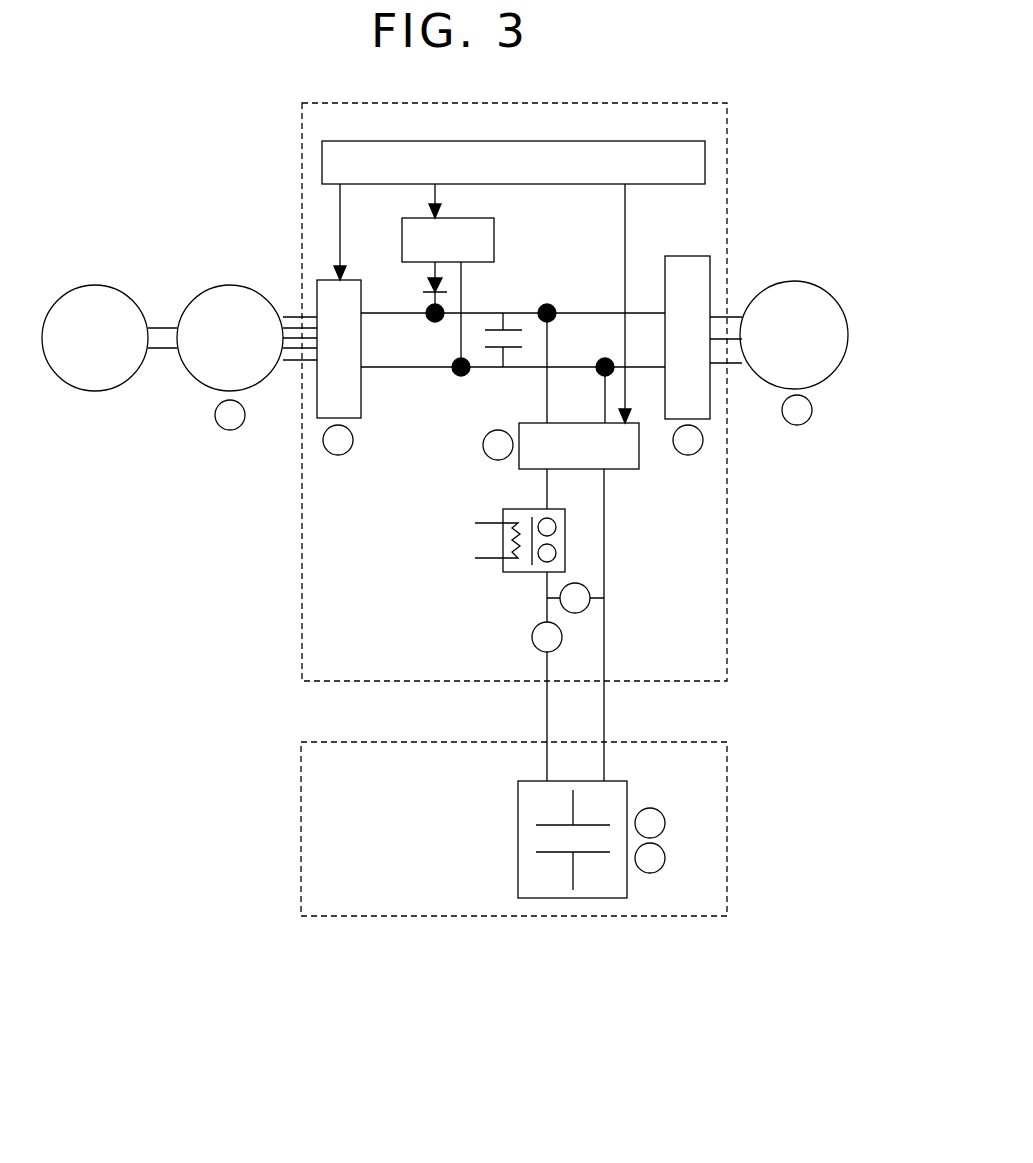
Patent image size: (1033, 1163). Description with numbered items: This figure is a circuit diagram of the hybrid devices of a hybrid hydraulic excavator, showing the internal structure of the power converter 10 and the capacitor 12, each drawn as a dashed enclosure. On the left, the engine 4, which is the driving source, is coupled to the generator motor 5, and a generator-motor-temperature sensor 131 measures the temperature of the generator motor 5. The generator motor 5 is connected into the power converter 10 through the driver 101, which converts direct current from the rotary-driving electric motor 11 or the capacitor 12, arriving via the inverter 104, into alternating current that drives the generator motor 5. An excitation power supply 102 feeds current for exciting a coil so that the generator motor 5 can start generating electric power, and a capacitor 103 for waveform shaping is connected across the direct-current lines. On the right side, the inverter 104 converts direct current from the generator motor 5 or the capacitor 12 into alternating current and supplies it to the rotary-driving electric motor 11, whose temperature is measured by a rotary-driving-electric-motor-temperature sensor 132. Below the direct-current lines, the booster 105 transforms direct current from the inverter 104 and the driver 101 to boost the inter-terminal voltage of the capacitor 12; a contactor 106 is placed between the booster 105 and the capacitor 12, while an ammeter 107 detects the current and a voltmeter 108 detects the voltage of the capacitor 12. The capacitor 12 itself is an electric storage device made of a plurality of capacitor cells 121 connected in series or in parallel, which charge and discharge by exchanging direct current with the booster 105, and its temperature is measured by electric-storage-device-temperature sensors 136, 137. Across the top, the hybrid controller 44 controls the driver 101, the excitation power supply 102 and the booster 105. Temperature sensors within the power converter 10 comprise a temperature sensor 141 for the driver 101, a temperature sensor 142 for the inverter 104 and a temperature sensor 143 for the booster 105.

The engine 4 is at (95, 285).
The generator motor 5 is at (208, 290).
The power converter 10 is at (690, 103).
The rotary-driving electric motor 11 is at (797, 282).
The capacitor 12 is at (418, 918).
The hybrid controller 44 is at (612, 141).
The driver 101 is at (317, 282).
The excitation power supply 102 is at (494, 234).
The capacitor 103 is at (515, 326).
The inverter 104 is at (690, 256).
The booster 105 is at (630, 470).
The contactor 106 is at (503, 509).
The ammeter 107 is at (532, 637).
The voltmeter 108 is at (590, 588).
The capacitor cells 121 is at (518, 846).
The generator-motor-temperature sensor 131 is at (225, 431).
The rotary-driving-electric-motor-temperature sensor 132 is at (797, 426).
The electric-storage-device-temperature sensor 136 is at (662, 812).
The electric-storage-device-temperature sensor 137 is at (662, 866).
The temperature sensor 141 is at (338, 456).
The temperature sensor 142 is at (688, 456).
The temperature sensor 143 is at (484, 445).